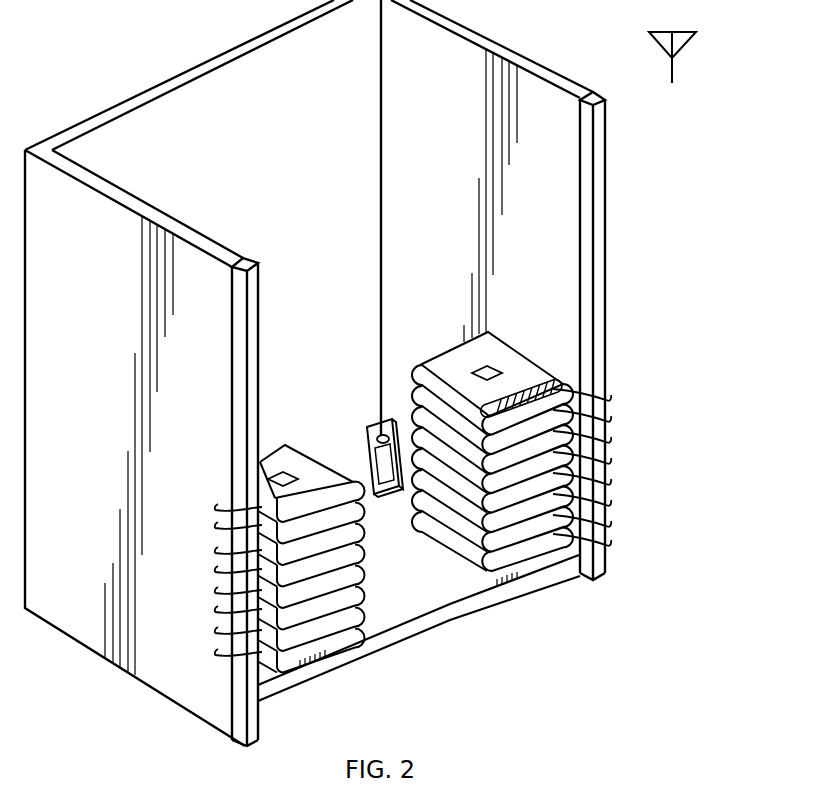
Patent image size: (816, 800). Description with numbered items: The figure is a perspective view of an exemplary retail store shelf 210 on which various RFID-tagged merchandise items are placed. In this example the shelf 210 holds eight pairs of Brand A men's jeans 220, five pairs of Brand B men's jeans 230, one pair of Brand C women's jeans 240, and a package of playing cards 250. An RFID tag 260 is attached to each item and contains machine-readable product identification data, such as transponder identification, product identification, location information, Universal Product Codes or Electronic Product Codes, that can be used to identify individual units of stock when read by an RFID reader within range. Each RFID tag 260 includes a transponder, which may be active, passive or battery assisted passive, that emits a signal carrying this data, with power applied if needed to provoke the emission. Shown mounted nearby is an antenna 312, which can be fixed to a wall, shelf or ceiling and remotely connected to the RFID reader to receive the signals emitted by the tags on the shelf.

The retail store shelf 210 is at (450, 612).
The Brand A men's jeans 220 is at (217, 503).
The Brand B men's jeans 230 is at (612, 413).
The Brand C women's jeans 240 is at (565, 390).
The package of playing cards 250 is at (367, 429).
The RFID tag 260 is at (488, 367).
The antenna 312 is at (676, 54).